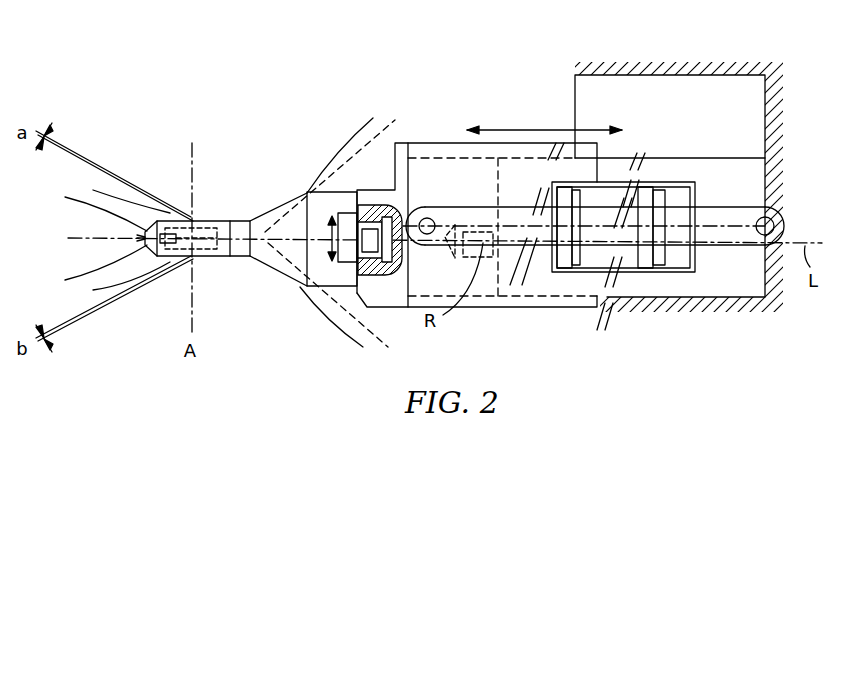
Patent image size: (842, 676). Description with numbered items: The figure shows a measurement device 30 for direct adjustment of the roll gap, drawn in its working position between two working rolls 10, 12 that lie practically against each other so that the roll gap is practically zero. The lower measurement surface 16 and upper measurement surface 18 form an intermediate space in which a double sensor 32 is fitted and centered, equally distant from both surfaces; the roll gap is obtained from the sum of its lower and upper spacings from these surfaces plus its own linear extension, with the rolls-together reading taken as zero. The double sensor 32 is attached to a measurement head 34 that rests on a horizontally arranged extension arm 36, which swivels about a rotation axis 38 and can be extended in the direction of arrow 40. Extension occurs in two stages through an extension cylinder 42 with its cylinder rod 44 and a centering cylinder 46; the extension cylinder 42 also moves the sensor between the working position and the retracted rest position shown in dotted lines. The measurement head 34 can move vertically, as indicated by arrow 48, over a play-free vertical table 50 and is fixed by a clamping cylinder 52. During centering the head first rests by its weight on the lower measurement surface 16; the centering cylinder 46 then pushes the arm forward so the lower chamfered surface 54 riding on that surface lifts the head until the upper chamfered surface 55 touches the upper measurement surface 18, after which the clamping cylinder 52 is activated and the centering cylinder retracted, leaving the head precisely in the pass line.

The working roll 10 is at (80, 270).
The working roll 12 is at (80, 206).
The lower measurement surface 16 is at (277, 268).
The upper measurement surface 18 is at (167, 214).
The measurement device 30 is at (473, 106).
The double sensor 32 is at (189, 243).
The measurement head 34 is at (287, 212).
The extension arm 36 is at (455, 170).
The rotation axis 38 is at (780, 208).
The arrow 40 is at (525, 125).
The extension cylinder 42 is at (568, 262).
The cylinder rod 44 is at (512, 235).
The centering cylinder 46 is at (660, 257).
The arrow 48 is at (330, 247).
The vertical table 50 is at (332, 220).
The clamping cylinder 52 is at (372, 213).
The lower chamfered surface 54 is at (260, 261).
The upper chamfered surface 55 is at (265, 212).